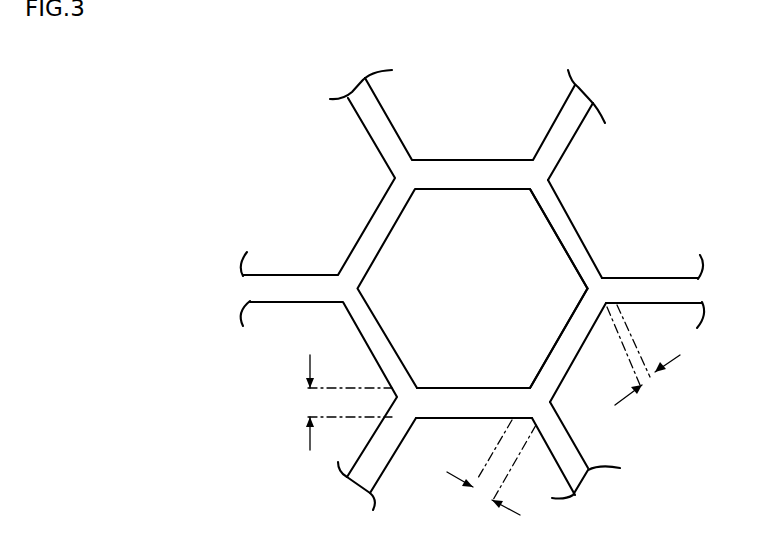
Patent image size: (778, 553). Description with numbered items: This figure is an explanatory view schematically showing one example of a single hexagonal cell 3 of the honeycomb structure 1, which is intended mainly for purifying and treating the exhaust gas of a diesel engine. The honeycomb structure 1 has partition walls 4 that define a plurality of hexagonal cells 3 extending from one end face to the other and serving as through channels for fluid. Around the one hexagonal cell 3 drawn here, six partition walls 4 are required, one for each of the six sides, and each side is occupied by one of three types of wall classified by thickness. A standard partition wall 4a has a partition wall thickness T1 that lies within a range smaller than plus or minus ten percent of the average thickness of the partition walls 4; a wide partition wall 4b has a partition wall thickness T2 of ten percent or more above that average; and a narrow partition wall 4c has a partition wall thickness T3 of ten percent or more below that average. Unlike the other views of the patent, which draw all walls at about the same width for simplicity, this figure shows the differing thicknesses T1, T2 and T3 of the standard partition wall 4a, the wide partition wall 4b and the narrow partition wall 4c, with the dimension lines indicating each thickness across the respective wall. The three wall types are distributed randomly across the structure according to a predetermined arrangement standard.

The honeycomb structure 1 is at (430, 290).
The hexagonal cell 3 is at (330, 213).
The partition walls 4 is at (541, 315).
The standard partition wall 4a is at (560, 360).
The wide partition wall 4b is at (447, 403).
The narrow partition wall 4c is at (565, 228).
The partition wall thickness T1 is at (482, 492).
The partition wall thickness T2 is at (312, 400).
The partition wall thickness T3 is at (651, 379).